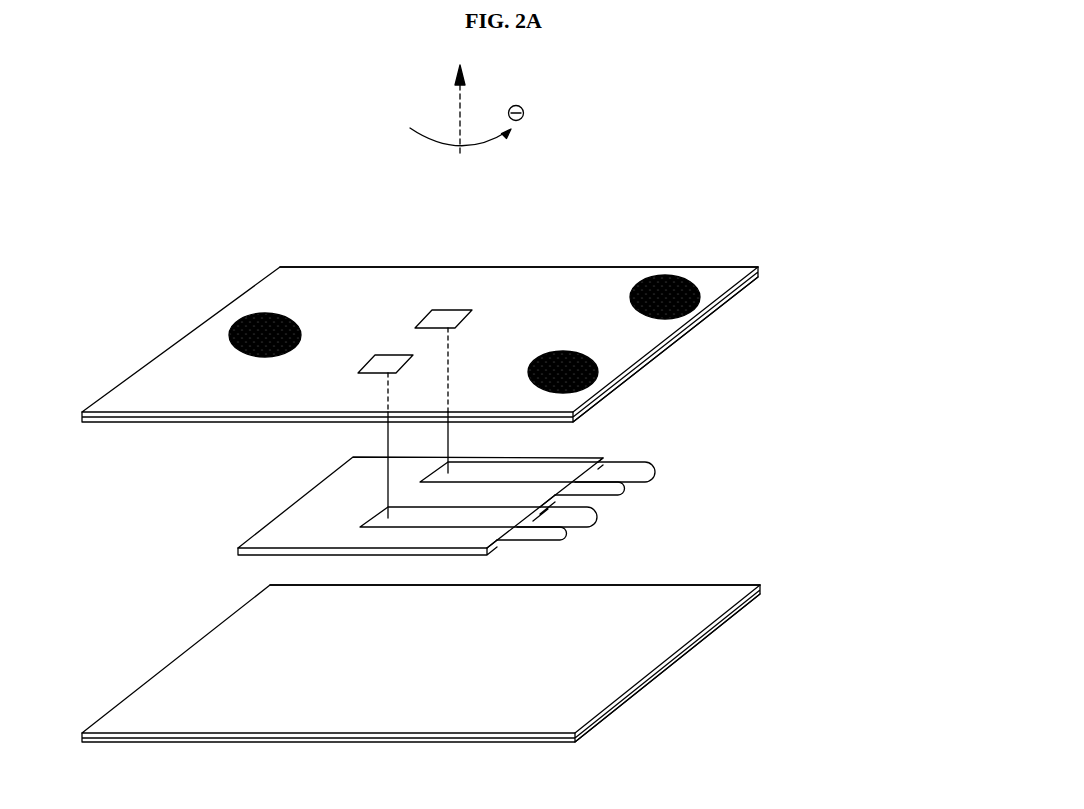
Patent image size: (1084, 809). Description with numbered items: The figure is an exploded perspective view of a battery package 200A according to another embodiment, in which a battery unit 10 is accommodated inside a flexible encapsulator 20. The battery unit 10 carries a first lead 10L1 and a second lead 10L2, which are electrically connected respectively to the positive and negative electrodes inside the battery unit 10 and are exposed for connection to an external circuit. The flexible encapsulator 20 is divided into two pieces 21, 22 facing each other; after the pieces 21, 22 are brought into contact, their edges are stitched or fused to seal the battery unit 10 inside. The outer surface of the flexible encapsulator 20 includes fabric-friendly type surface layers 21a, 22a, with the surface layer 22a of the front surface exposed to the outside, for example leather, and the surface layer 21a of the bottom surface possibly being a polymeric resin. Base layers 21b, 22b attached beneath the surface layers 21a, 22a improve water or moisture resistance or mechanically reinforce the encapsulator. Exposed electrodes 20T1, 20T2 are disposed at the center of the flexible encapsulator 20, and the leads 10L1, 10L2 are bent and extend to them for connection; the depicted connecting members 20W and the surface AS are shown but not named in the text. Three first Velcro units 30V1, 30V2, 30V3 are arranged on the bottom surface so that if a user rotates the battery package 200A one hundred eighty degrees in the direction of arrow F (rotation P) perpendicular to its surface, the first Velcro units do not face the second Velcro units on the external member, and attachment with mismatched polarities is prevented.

The battery package 200A is at (735, 242).
The flexible encapsulator 20 is at (902, 253).
The piece of flexible encapsulator 21 is at (858, 228).
The fabric-friendly type surface layer 21a is at (760, 266).
The base layer 21b is at (760, 279).
The piece of flexible encapsulator 22 is at (858, 550).
The fabric-friendly type surface layer 22a is at (762, 598).
The base layer 22b is at (762, 587).
The attachment surface AS is at (497, 292).
The first Velcro unit 30V1 is at (262, 313).
The first Velcro unit 30V2 is at (660, 275).
The first Velcro unit 30V3 is at (558, 351).
The exposed electrode 20T1 is at (384, 353).
The exposed electrode 20T2 is at (450, 308).
The wires 20W is at (388, 442).
The battery unit 10 is at (238, 548).
The first lead 10L1 is at (582, 520).
The second lead 10L2 is at (642, 475).
The arrow F is at (460, 118).
The rotation direction P is at (410, 128).